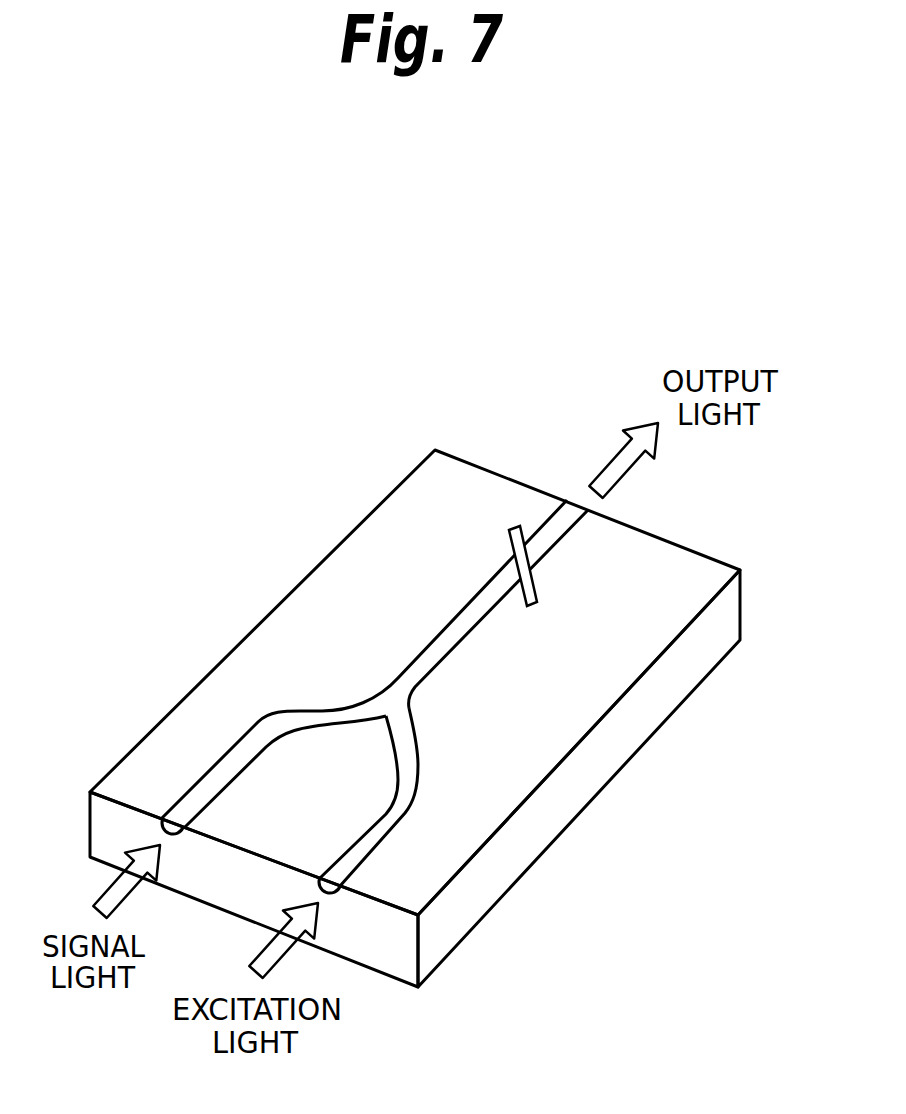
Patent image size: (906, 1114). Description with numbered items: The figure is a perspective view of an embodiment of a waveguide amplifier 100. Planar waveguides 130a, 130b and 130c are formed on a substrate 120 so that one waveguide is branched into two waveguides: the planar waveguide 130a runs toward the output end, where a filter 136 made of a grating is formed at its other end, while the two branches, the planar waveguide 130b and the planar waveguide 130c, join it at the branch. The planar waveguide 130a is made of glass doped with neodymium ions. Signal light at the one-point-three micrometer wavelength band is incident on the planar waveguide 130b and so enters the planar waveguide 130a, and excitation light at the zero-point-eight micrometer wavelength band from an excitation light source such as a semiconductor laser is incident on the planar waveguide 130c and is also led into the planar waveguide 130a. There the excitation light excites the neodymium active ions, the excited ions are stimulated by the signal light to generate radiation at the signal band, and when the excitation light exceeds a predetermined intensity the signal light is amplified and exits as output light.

The waveguide amplifier 100 is at (415, 693).
The substrate 120 is at (597, 777).
The planar waveguide 130a is at (456, 632).
The planar waveguide 130b is at (245, 752).
The planar waveguide 130c is at (402, 812).
The filter 136 is at (532, 606).